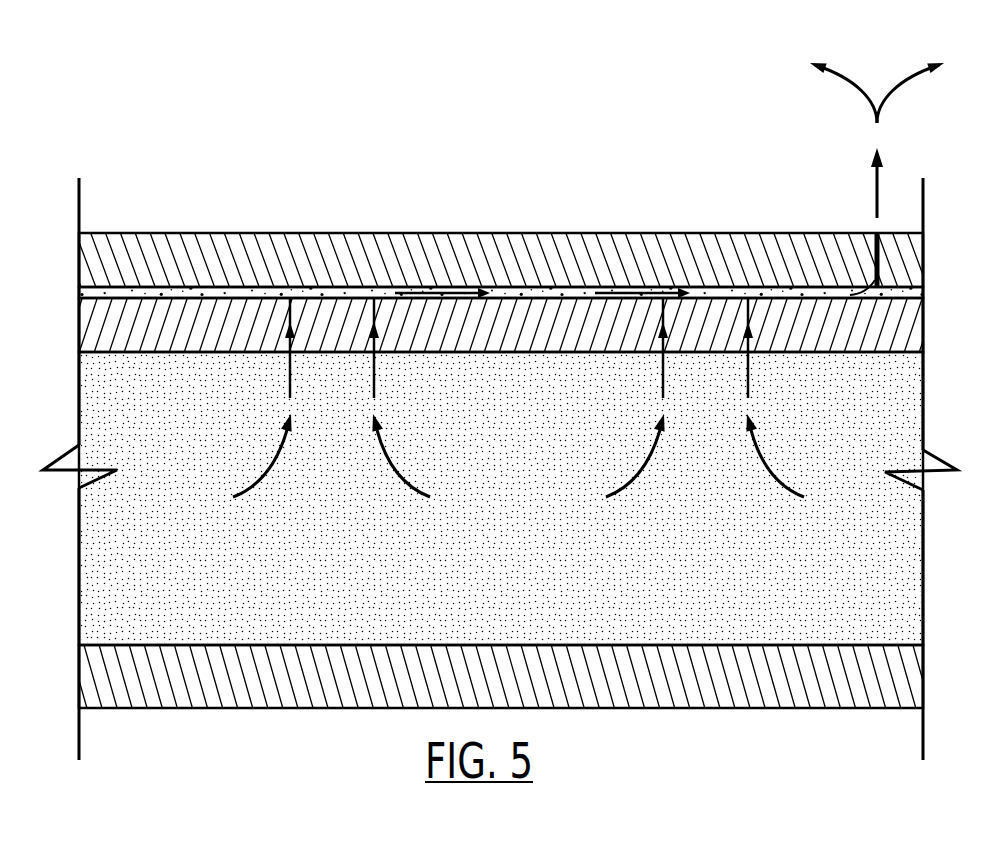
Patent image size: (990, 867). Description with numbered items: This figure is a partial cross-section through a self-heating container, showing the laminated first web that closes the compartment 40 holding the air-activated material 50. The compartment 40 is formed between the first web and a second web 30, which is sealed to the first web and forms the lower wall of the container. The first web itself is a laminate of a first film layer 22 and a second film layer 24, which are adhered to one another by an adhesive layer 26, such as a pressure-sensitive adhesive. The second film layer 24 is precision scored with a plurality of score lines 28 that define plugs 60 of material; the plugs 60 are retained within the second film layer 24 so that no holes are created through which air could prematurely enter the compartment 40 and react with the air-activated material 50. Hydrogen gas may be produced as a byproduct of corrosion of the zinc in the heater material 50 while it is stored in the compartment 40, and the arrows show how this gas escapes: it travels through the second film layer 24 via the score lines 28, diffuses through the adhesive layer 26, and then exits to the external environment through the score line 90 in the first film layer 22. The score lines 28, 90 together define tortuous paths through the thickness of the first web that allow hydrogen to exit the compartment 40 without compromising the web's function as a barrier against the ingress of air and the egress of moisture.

The first film layer 22 is at (239, 248).
The adhesive layer 26 is at (98, 285).
The second film layer 24 is at (90, 328).
The compartment 40 is at (906, 567).
The second web 30 is at (248, 710).
The score lines 28 is at (288, 340).
The plugs 60 is at (338, 328).
The air-activated material 50 is at (906, 403).
The score line 90 is at (880, 270).